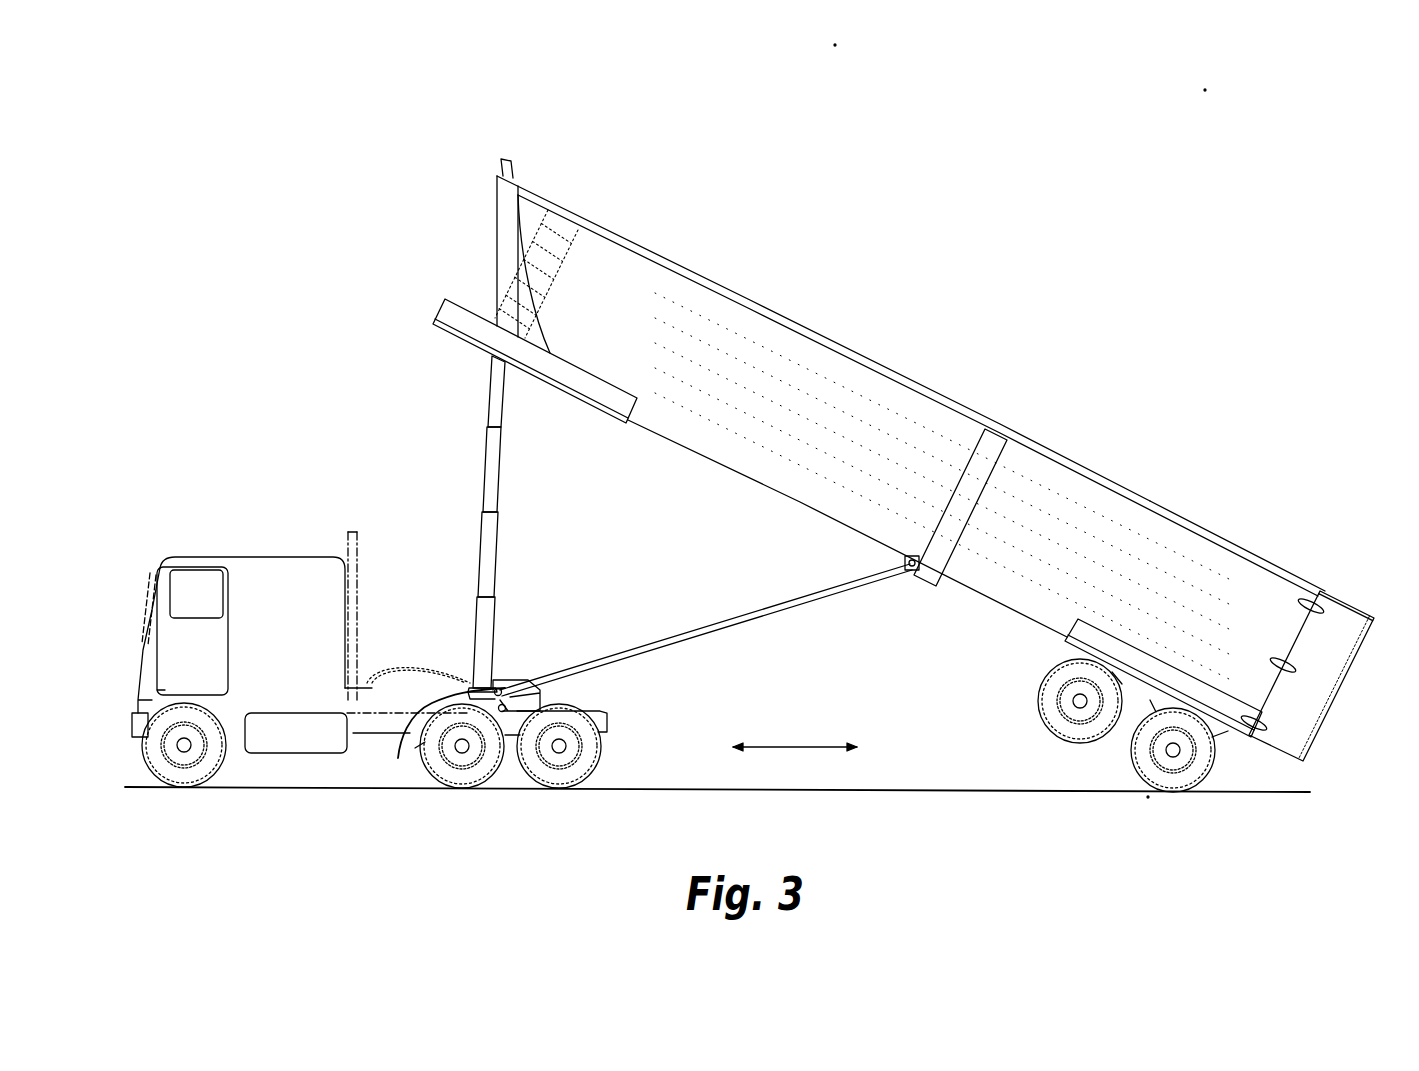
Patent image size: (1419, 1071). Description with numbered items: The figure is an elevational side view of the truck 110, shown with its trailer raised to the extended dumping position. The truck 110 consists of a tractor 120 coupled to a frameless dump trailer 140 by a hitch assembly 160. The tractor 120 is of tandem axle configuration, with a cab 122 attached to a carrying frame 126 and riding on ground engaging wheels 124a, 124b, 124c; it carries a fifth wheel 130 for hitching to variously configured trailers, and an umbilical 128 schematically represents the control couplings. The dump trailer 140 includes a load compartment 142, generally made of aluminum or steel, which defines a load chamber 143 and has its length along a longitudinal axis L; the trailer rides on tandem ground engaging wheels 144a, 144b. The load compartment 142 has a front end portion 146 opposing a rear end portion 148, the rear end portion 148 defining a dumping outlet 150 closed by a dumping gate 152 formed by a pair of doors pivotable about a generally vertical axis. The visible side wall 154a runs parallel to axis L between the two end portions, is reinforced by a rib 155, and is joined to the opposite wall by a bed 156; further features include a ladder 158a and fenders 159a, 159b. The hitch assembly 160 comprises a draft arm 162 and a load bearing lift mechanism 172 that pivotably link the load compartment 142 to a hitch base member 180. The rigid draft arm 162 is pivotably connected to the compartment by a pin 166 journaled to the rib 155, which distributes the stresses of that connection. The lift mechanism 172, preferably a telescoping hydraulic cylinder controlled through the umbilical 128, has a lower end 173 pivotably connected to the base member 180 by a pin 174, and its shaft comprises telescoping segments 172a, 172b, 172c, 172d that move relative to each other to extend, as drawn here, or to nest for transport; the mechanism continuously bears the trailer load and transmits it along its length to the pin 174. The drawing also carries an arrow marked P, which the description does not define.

The truck 110 is at (312, 358).
The tractor 120 is at (230, 550).
The cab 122 is at (148, 626).
The ground engaging wheel 124a is at (208, 786).
The ground engaging wheel 124b is at (482, 788).
The ground engaging wheel 124c is at (596, 772).
The carrying frame 126 is at (420, 750).
The umbilical 128 is at (368, 683).
The fifth wheel 130 is at (545, 702).
The frameless dump trailer 140 is at (488, 216).
The load compartment 142 is at (1047, 446).
The load chamber 143 is at (1231, 541).
The ground engaging wheel 144a is at (1042, 720).
The ground engaging wheel 144b is at (1142, 784).
The front end portion 146 is at (494, 262).
The rear end portion 148 is at (1323, 606).
The dumping outlet 150 is at (1318, 742).
The dumping gate 152 is at (1366, 614).
The side wall 154a is at (1145, 545).
The rib 155 is at (966, 487).
The bed 156 is at (713, 468).
The ladder 158a is at (572, 257).
The fender 159a is at (628, 430).
The fender 159b is at (1072, 628).
The hitch assembly 160 is at (544, 640).
The draft arm 162 is at (744, 624).
The pin 166 is at (912, 576).
The lift mechanism 172 is at (504, 415).
The telescoping segment 172a is at (474, 612).
The telescoping segment 172b is at (480, 540).
The telescoping segment 172c is at (484, 462).
The telescoping segment 172d is at (488, 396).
The lower end 173 is at (478, 664).
The pin 174 is at (398, 758).
The hitch base member 180 is at (500, 680).
The longitudinal axis L is at (405, 217).
The direction of travel P is at (797, 746).